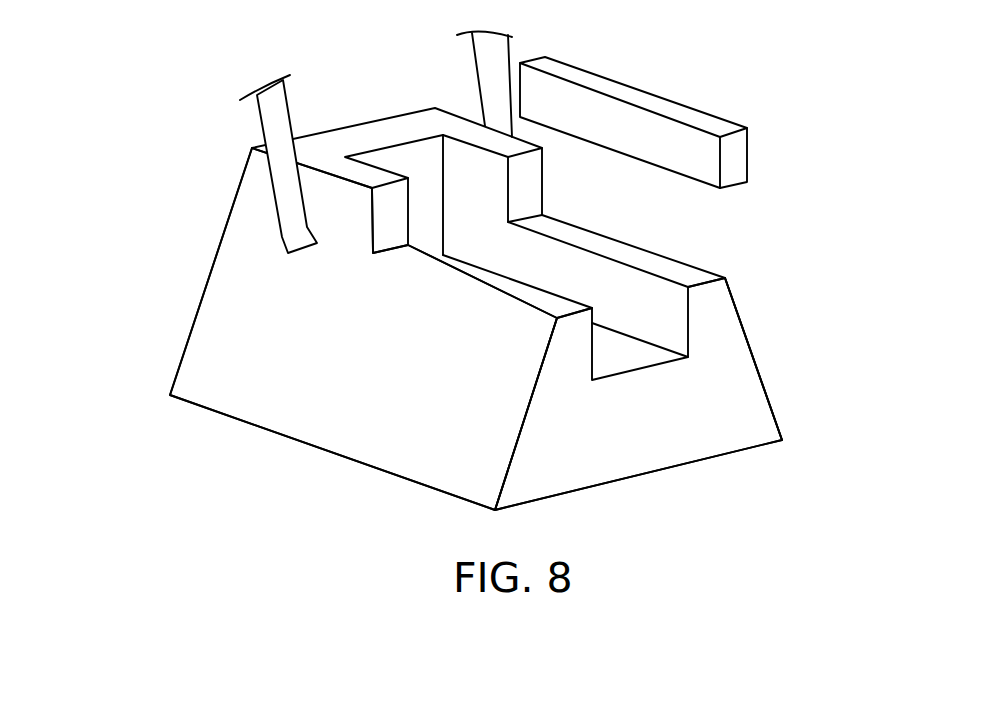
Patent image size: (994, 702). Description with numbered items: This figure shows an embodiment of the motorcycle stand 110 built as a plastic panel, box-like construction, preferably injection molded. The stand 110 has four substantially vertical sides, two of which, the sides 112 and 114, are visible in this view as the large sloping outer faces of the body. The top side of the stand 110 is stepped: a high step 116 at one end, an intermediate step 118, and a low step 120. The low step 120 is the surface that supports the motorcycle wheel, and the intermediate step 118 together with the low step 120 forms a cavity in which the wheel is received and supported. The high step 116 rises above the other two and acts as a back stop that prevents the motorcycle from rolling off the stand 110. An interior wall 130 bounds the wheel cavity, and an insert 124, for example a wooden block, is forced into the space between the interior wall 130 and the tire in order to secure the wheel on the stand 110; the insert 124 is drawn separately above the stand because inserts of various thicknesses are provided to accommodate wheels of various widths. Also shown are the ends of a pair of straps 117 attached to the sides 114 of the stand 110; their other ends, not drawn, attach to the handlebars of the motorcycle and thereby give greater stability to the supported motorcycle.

The stand 110 is at (163, 270).
The side 112 is at (740, 400).
The side 114 is at (212, 337).
The high step 116 is at (375, 137).
The straps 117 is at (275, 112).
The intermediate step 118 is at (693, 272).
The low step 120 is at (632, 357).
The insert 124 is at (720, 123).
The interior wall 130 is at (627, 292).